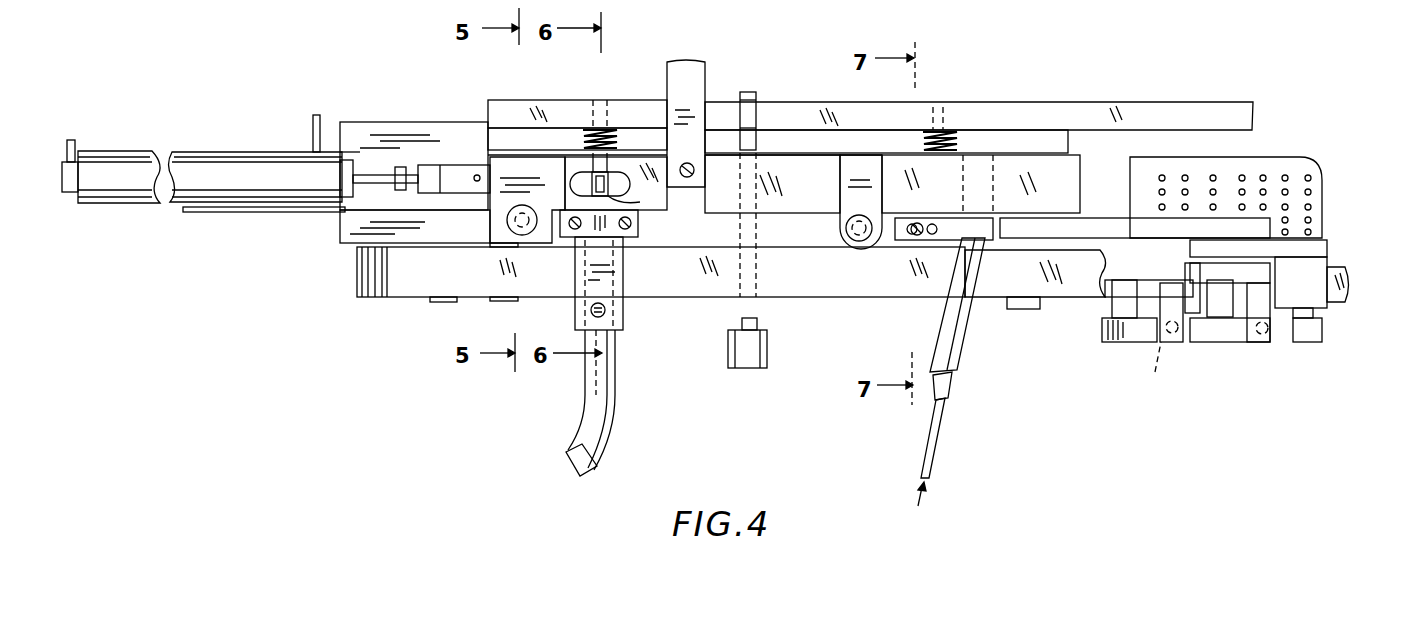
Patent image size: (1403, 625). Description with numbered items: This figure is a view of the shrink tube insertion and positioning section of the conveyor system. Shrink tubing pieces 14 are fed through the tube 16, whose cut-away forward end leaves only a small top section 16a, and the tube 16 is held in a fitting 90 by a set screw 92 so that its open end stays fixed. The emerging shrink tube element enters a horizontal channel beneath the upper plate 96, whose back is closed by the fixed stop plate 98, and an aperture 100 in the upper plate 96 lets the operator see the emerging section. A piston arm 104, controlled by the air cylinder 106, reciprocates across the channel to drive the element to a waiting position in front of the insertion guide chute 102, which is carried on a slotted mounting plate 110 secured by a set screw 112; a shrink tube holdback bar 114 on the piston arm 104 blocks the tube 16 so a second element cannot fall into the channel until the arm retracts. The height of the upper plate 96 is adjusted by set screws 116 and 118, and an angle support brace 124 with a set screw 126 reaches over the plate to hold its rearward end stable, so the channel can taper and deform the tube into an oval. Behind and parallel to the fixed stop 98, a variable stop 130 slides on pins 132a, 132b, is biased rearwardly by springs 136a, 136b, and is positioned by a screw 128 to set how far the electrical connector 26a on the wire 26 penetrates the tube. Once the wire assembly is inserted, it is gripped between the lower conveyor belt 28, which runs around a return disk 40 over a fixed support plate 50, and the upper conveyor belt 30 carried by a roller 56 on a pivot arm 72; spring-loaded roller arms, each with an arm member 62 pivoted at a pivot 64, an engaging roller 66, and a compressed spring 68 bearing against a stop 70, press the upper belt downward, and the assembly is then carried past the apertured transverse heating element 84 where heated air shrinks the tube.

The shrink tubing piece 14 is at (622, 172).
The tube 16 is at (600, 400).
The top section of tube 16a is at (630, 194).
The wire 26 is at (935, 452).
The electrical connector 26a is at (950, 390).
The lower conveyor belt 28 is at (357, 271).
The upper conveyor belt 30 is at (1092, 290).
The lower conveyor return disk 40 is at (381, 298).
The fixed support plate 50 is at (1318, 246).
The roller 56 is at (995, 300).
The arm member 62 is at (1118, 345).
The pivot 64 is at (1098, 350).
The engaging roller 66 is at (1193, 292).
The compressed spring 68 is at (1157, 367).
The stop 70 is at (1160, 330).
The arm 72 is at (1112, 228).
The transverse heating element 84 is at (1273, 164).
The fitting 90 is at (623, 276).
The set screw 92 is at (591, 311).
The upper plate 96 is at (638, 221).
The stop plate 98 is at (500, 147).
The aperture 100 is at (584, 170).
The insertion guide chute 102 is at (945, 342).
The piston arm 104 is at (449, 176).
The air cylinder 106 is at (238, 162).
The mounting plate 110 is at (942, 232).
The set screw 112 is at (918, 224).
The shrink tube holdback bar 114 is at (433, 223).
The set screw 116 is at (522, 214).
The set screw 118 is at (849, 228).
The angle support brace 124 is at (694, 75).
The set screw 126 is at (694, 172).
The screw 128 is at (767, 352).
The variable stop 130 is at (830, 112).
The pin 132a is at (604, 106).
The pin 132b is at (943, 108).
The spring 136a is at (590, 128).
The spring 136b is at (960, 135).